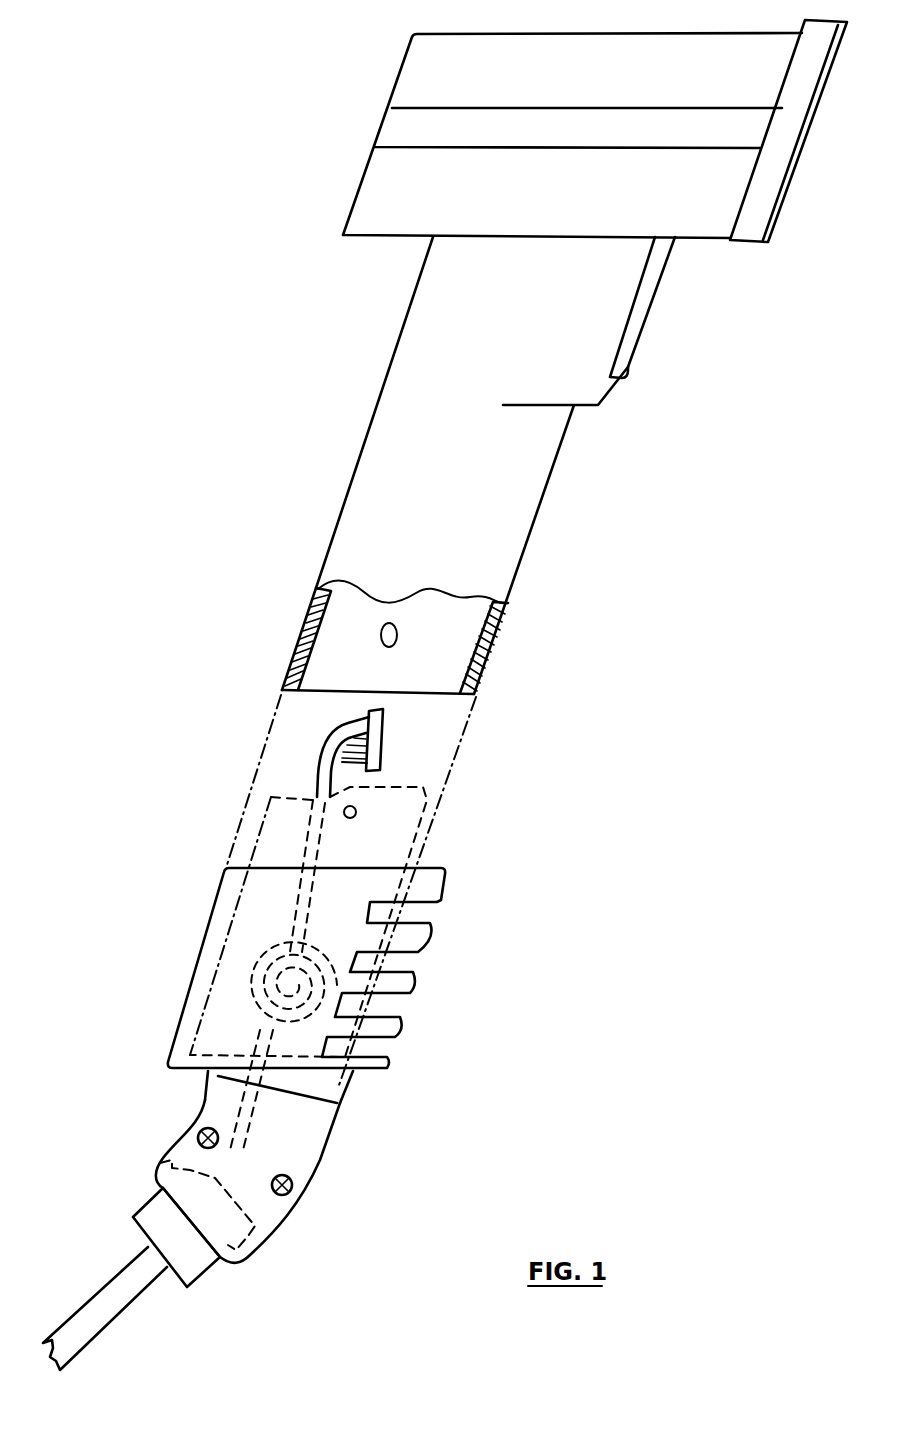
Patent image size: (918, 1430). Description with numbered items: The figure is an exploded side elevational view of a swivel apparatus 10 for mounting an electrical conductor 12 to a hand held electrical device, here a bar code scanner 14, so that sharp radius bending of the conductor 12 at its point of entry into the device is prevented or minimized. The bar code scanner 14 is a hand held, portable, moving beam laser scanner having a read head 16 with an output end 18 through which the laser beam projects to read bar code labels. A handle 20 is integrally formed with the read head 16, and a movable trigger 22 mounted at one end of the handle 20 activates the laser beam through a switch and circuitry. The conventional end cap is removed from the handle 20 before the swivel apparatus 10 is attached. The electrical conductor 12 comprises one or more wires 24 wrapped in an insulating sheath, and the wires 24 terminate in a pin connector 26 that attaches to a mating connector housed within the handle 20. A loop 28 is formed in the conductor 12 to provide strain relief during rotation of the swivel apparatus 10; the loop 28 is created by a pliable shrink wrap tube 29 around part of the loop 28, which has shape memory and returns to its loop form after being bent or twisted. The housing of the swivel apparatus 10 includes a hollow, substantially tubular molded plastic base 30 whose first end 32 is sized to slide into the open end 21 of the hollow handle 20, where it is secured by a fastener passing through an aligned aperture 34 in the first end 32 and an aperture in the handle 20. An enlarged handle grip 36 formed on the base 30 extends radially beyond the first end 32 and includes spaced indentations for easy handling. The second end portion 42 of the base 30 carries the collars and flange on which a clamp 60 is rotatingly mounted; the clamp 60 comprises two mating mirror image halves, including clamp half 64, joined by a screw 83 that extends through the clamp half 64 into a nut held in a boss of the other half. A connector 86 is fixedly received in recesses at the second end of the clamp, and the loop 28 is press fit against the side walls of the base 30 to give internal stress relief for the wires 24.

The swivel apparatus 10 is at (184, 837).
The electrical conductor 12 is at (117, 1317).
The bar code scanner 14 is at (398, 434).
The read head 16 is at (698, 203).
The output end 18 is at (800, 177).
The handle 20 is at (442, 648).
The open end 21 is at (386, 694).
The trigger 22 is at (630, 338).
The wires 24 is at (327, 750).
The pin connector 26 is at (370, 773).
The loop 28 is at (377, 955).
The shrink wrap tube 29 is at (253, 1042).
The base 30 is at (256, 947).
The first end 32 is at (387, 823).
The aperture 34 is at (342, 810).
The handle grip 36 is at (510, 986).
The second end portion 42 is at (345, 1090).
The clamp 60 is at (312, 1204).
The clamp half 64 is at (275, 1212).
The screw 83 is at (450, 1178).
The connector 86 is at (132, 1235).